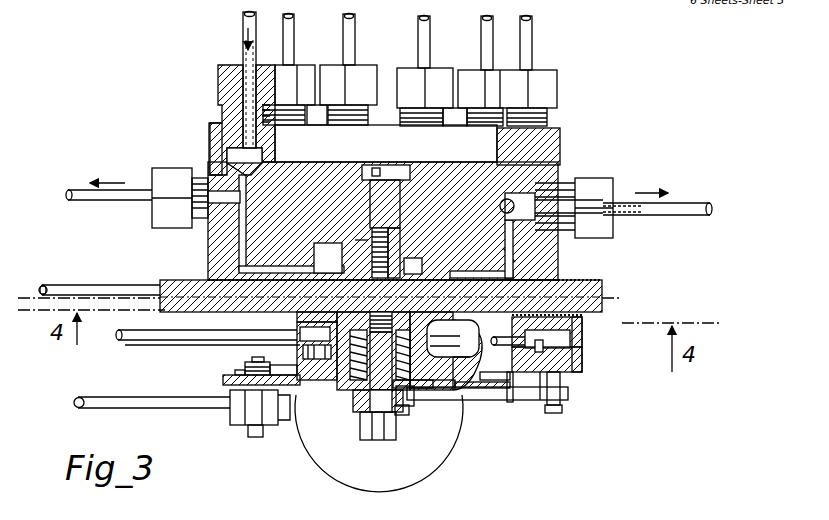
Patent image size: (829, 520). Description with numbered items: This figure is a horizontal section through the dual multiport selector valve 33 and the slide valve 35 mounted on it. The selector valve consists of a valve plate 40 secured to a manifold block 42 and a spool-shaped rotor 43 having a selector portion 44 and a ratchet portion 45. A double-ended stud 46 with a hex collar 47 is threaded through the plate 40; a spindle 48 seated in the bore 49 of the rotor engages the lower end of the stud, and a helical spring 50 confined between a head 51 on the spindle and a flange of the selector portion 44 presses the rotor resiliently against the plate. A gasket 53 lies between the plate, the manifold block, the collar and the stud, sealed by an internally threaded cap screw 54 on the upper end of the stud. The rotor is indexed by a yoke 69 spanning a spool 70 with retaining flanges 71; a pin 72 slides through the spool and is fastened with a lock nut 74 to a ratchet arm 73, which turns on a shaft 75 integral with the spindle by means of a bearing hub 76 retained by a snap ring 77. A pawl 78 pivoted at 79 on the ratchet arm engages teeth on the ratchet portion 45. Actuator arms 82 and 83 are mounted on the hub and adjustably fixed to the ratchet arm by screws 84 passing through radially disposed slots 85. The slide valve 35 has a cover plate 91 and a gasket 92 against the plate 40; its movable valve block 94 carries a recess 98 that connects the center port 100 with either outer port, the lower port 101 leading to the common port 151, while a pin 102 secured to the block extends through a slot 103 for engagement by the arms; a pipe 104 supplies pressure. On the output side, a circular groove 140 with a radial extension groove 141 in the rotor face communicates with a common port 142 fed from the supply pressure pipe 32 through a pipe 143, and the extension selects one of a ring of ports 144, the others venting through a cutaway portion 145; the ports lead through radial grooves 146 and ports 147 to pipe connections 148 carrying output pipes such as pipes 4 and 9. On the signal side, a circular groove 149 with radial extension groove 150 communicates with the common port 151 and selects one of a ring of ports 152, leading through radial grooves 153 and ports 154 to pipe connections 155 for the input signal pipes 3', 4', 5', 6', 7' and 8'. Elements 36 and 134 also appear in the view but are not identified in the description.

The input signal pipe 3' is at (222, 78).
The input signal pipe 4' is at (288, 68).
The input signal pipe 5' is at (348, 68).
The input signal pipe 6' is at (421, 71).
The input signal pipe 7' is at (504, 71).
The input signal pipe 8' is at (539, 71).
The output pipe 4 is at (115, 195).
The output pipe 9 is at (696, 204).
The supply pressure pipe 32 is at (40, 290).
The dual multiport selector valve 33 is at (297, 316).
The slide valve 35 is at (583, 366).
The enlarged detail circle 36 is at (455, 440).
The valve plate 40 is at (160, 283).
The manifold block 42 is at (208, 150).
The rotor 43 is at (478, 345).
The selector portion 44 is at (445, 328).
The ratchet portion 45 is at (348, 382).
The double-ended stud 46 is at (392, 238).
The hex collar 47 is at (402, 255).
The spindle 48 is at (372, 380).
The bore 49 is at (340, 380).
The helical spring 50 is at (445, 383).
The head 51 is at (470, 390).
The gasket 53 is at (208, 281).
The internally threaded cap screw 54 is at (388, 168).
The yoke 69 is at (287, 420).
The spool 70 is at (240, 418).
The retaining flanges 71 is at (223, 380).
The pin 72 is at (257, 438).
The ratchet arm 73 is at (235, 372).
The lock nut 74 is at (250, 366).
The shaft 75 is at (380, 441).
The bearing hub 76 is at (403, 416).
The snap ring 77 is at (362, 412).
The pawl 78 is at (266, 356).
The pivot 79 is at (297, 372).
The actuator arm 82 is at (568, 398).
The actuator arm 83 is at (510, 400).
The screws 84 is at (408, 404).
The radially disposed slots 85 is at (412, 388).
The cover plate 91 is at (560, 385).
The gasket 92 is at (583, 318).
The movable valve block 94 is at (572, 332).
The recess 98 is at (582, 348).
The center port 100 is at (510, 338).
The lower port 101 is at (492, 373).
The pin 102 is at (558, 413).
The slot 103 is at (541, 400).
The pipe 104 is at (150, 340).
The tube 134 is at (88, 397).
The circular groove 140 is at (448, 336).
The radial extension groove 141 is at (300, 322).
The common port 142 is at (200, 318).
The pipe 143 is at (68, 287).
The ring of ports 144 is at (288, 270).
The cutaway portion 145 is at (513, 277).
The radial grooves 146 is at (282, 262).
The ports 147 is at (262, 238).
The pipe connections 148 is at (208, 170).
The circular groove 149 is at (458, 357).
The radial extension groove 150 is at (328, 334).
The common port 151 is at (560, 282).
The ring of ports 152 is at (322, 272).
The radial grooves 153 is at (364, 240).
The ports 154 is at (238, 252).
The pipe connections 155 is at (222, 138).